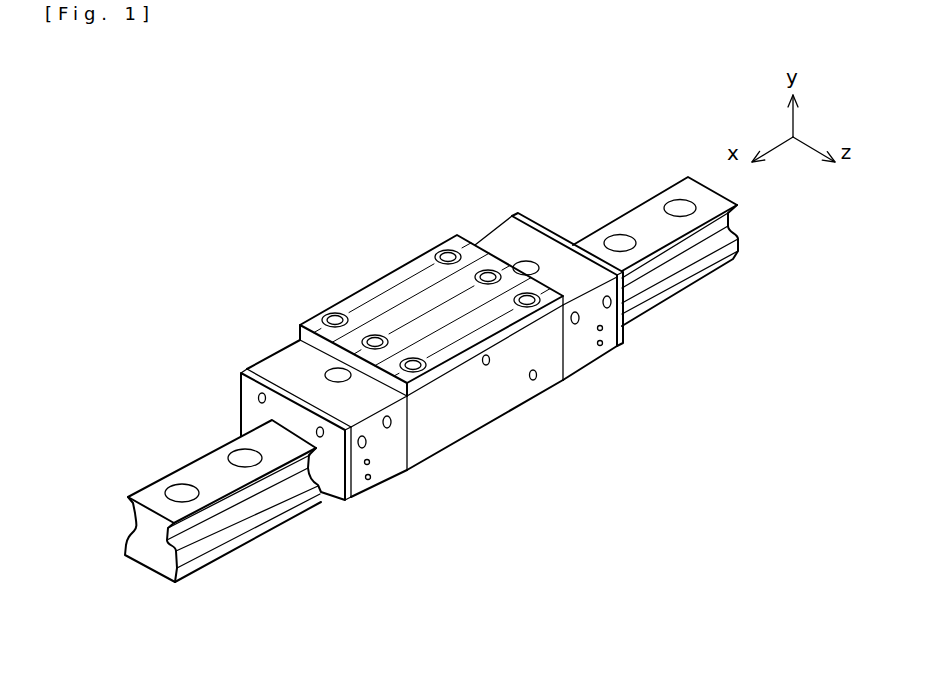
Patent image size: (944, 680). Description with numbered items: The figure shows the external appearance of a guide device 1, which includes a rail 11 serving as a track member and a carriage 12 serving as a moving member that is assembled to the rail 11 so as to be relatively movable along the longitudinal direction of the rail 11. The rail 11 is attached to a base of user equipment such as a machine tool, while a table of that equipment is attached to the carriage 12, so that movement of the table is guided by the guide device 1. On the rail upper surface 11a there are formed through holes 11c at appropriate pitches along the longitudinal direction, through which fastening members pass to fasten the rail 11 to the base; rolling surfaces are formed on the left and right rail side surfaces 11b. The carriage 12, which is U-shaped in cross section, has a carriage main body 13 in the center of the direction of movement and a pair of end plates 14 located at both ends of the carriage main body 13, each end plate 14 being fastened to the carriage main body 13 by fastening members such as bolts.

The guide device 1 is at (221, 271).
The rail 11 is at (252, 506).
The rail upper surface 11a is at (150, 497).
The rail side surfaces 11b is at (180, 562).
The through holes 11c is at (182, 490).
The carriage 12 is at (622, 442).
The carriage main body 13 is at (496, 407).
The end plates 14 is at (385, 468).